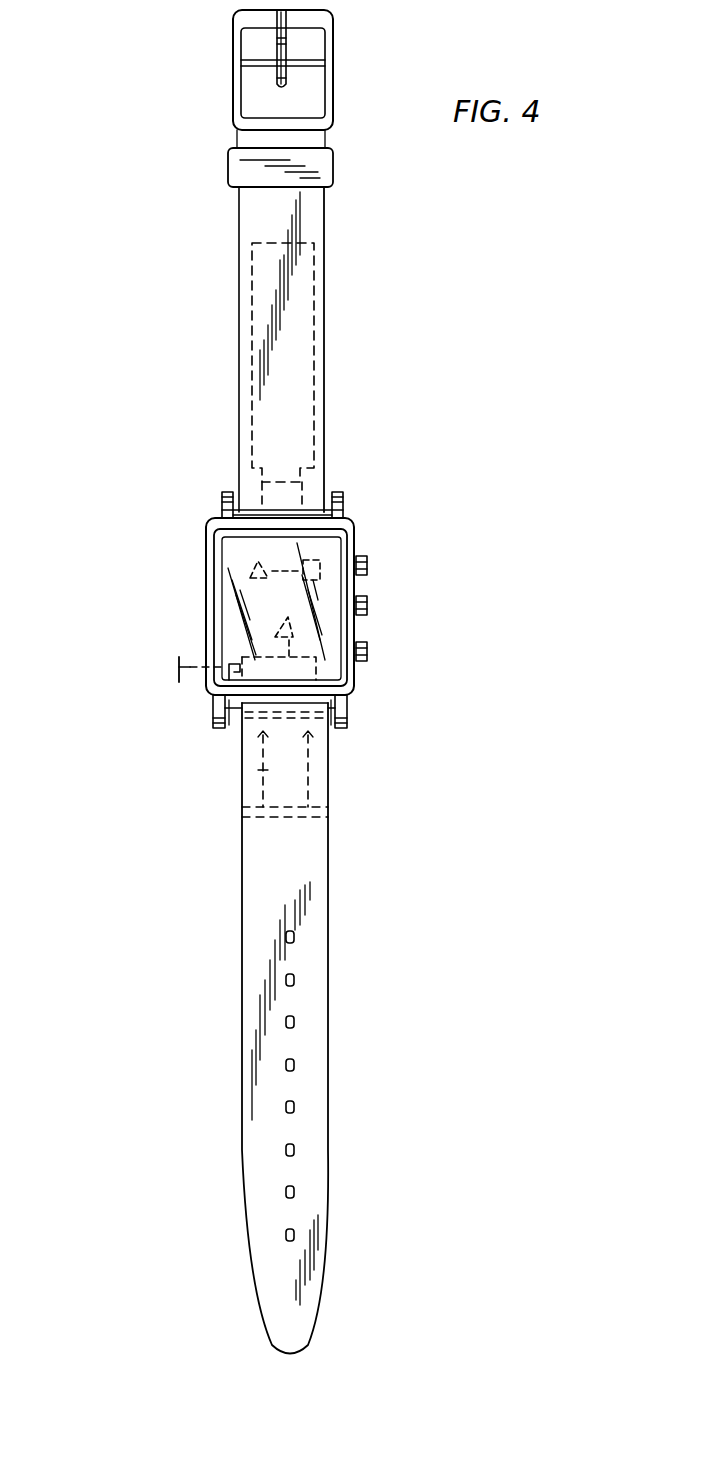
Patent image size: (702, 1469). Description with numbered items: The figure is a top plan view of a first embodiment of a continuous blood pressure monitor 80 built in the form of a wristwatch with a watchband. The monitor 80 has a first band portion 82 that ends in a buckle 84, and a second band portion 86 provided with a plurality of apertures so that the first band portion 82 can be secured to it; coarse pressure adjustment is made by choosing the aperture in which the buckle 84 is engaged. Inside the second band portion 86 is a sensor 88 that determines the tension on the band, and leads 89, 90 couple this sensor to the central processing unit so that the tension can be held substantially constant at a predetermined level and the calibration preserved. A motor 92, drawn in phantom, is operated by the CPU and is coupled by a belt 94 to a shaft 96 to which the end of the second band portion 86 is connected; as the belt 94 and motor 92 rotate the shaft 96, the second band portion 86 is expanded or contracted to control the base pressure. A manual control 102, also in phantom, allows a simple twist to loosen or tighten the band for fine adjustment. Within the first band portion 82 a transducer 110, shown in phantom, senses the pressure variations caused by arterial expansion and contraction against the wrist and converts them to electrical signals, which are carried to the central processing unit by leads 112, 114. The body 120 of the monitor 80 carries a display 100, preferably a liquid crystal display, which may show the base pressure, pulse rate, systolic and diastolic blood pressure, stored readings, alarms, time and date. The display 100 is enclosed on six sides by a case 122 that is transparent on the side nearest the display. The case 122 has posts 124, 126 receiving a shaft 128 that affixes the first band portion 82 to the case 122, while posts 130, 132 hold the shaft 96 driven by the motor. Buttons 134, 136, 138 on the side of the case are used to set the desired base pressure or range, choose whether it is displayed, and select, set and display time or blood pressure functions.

The blood pressure monitor 80 is at (215, 606).
The first band portion 82 is at (317, 206).
The buckle 84 is at (326, 23).
The second band portion 86 is at (330, 987).
The sensor 88 is at (328, 815).
The lead 89 is at (262, 770).
The lead 90 is at (328, 778).
The motor 92 is at (360, 683).
The belt 94 is at (236, 712).
The shaft 96 is at (335, 735).
The display 100 is at (325, 613).
The manual control 102 is at (175, 674).
The transducer 110 is at (305, 325).
The lead 112 is at (252, 480).
The lead 114 is at (333, 478).
The body 120 is at (207, 528).
The case 122 is at (207, 613).
The post 124 is at (222, 500).
The post 126 is at (344, 506).
The shaft 128 is at (232, 492).
The post 130 is at (213, 715).
The post 132 is at (348, 712).
The button 134 is at (367, 562).
The button 136 is at (367, 605).
The button 138 is at (367, 652).